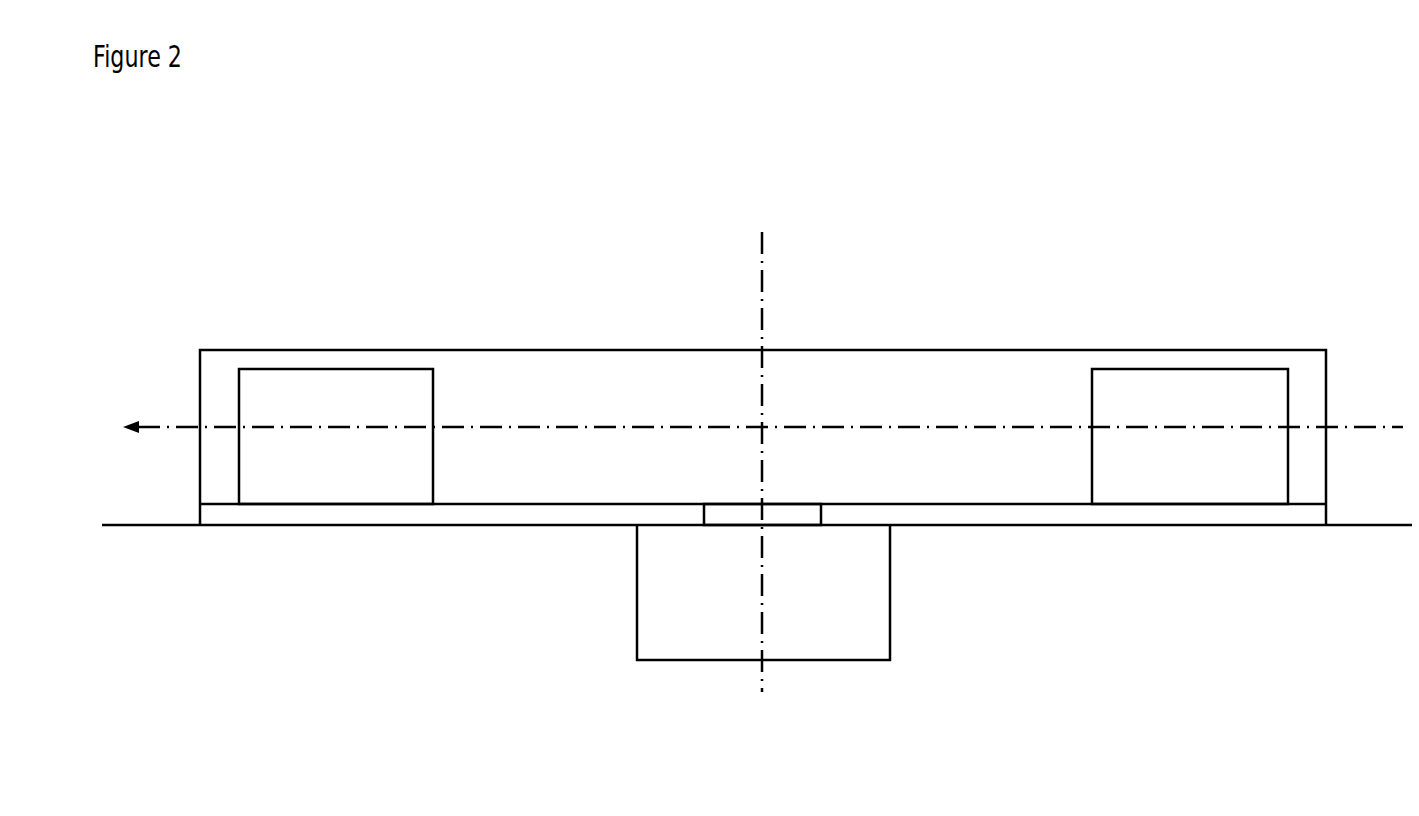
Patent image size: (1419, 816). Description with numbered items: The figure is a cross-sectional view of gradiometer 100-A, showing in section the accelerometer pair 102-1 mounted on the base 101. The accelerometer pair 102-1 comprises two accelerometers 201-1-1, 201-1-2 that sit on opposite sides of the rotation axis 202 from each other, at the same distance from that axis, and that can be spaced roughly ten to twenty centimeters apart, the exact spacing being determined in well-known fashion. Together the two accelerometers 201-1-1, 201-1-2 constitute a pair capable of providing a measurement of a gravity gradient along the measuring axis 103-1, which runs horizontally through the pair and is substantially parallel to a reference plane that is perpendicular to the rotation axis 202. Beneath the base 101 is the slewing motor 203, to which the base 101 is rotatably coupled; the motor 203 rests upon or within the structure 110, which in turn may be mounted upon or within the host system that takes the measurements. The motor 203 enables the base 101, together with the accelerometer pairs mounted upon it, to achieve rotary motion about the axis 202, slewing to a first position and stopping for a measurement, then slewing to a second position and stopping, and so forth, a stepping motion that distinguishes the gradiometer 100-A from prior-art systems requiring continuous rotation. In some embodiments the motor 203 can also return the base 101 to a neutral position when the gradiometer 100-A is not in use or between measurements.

The gradiometer 100-A is at (505, 262).
The base 101 is at (763, 539).
The accelerometer pair 102-1 is at (763, 411).
The measuring axis 103-1 is at (763, 365).
The structure 110 is at (357, 590).
The accelerometer 201-1-1 is at (359, 401).
The accelerometer 201-1-2 is at (1212, 401).
The rotation axis 202 is at (804, 462).
The slewing motor 203 is at (810, 592).